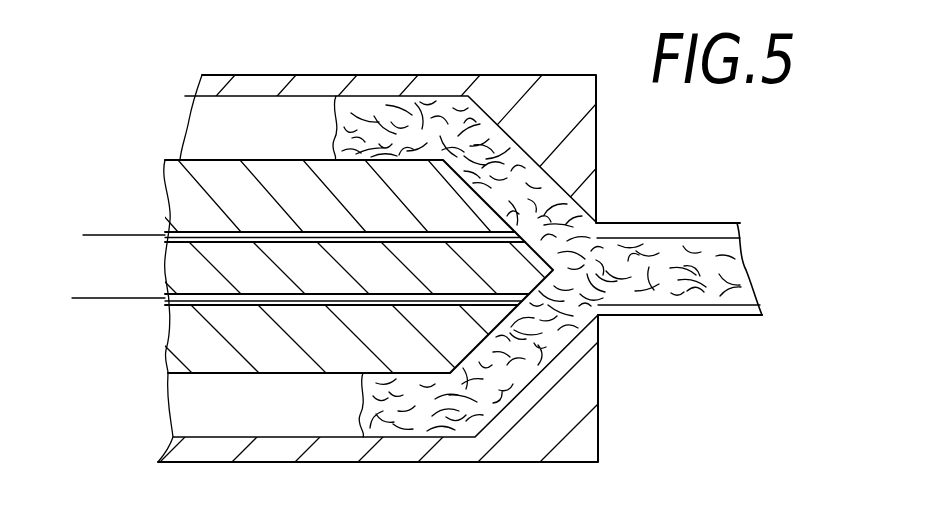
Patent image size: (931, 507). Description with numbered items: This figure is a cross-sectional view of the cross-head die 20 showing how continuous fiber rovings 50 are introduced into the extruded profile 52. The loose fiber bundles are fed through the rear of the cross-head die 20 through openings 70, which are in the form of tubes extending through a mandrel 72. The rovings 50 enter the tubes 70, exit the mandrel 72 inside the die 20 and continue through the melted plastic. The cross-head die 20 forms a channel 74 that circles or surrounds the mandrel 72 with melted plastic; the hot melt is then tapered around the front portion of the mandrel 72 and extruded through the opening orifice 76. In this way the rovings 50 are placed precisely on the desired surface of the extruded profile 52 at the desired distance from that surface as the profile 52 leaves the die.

The cross-head die 20 is at (186, 83).
The fiber rovings 50 is at (120, 236).
The extruded profile 52 is at (682, 222).
The openings 70 is at (188, 223).
The mandrel 72 is at (463, 360).
The channel 74 is at (461, 116).
The opening orifice 76 is at (610, 211).